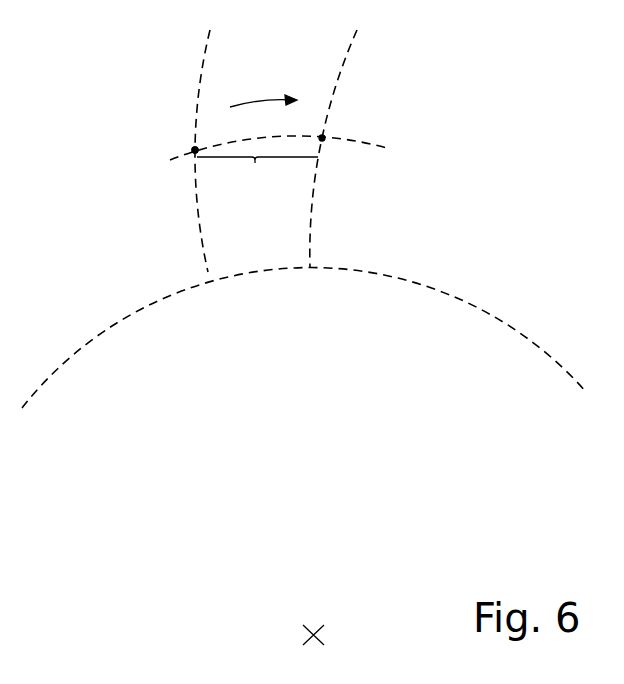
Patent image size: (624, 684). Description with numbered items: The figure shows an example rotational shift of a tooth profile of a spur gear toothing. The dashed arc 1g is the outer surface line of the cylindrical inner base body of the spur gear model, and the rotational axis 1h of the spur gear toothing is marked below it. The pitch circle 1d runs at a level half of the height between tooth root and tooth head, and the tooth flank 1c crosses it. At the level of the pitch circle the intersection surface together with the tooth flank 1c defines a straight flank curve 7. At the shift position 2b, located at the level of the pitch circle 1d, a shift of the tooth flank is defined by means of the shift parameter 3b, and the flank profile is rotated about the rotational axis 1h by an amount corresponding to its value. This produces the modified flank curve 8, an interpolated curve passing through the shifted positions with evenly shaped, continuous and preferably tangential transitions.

The tooth flank 1c is at (203, 63).
The pitch circle 1d is at (367, 145).
The outer surface line of the cylindrical inner base body 1g is at (70, 357).
The rotational axis 1h is at (318, 630).
The shift position 2b is at (193, 148).
The shift parameter 3b is at (257, 178).
The flank curve 7 is at (190, 160).
The modified flank curve 8 is at (327, 143).